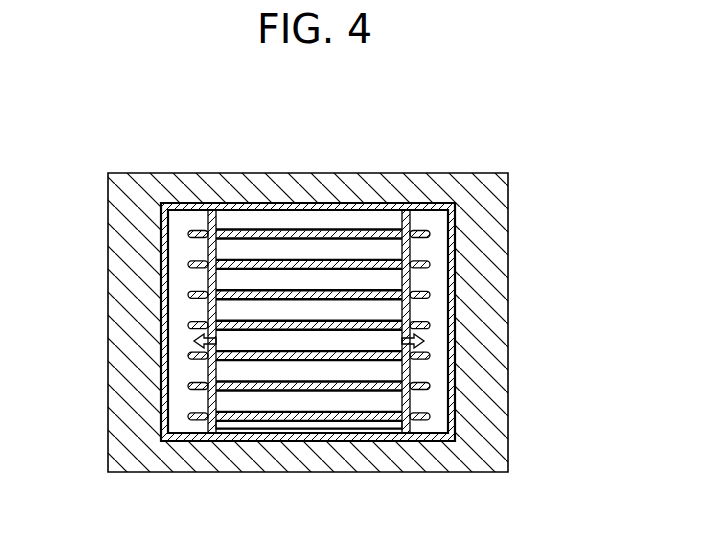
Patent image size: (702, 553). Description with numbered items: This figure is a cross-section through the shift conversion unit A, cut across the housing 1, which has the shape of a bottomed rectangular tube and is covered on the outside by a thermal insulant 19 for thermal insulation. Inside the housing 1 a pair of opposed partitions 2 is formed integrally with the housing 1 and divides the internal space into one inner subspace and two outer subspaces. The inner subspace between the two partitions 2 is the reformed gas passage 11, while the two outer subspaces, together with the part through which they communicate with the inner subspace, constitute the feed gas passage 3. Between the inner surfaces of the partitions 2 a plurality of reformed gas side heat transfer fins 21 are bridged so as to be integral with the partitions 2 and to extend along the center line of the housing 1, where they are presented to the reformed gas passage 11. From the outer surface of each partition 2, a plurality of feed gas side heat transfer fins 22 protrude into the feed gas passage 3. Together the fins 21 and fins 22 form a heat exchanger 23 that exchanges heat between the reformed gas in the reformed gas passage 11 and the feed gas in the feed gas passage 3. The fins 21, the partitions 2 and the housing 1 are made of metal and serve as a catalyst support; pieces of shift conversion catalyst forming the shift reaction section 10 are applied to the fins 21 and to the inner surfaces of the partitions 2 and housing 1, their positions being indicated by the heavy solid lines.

The shift conversion unit A is at (96, 97).
The housing 1 is at (284, 205).
The partitions 2 is at (178, 310).
The feed gas passage 3 is at (180, 254).
The shift reaction section 10 is at (380, 212).
The reformed gas passage 11 is at (343, 248).
The thermal insulant 19 is at (473, 455).
The reformed gas side heat transfer fins 21 is at (240, 262).
The feed gas side heat transfer fins 22 is at (182, 416).
The heat exchanger 23 is at (262, 430).